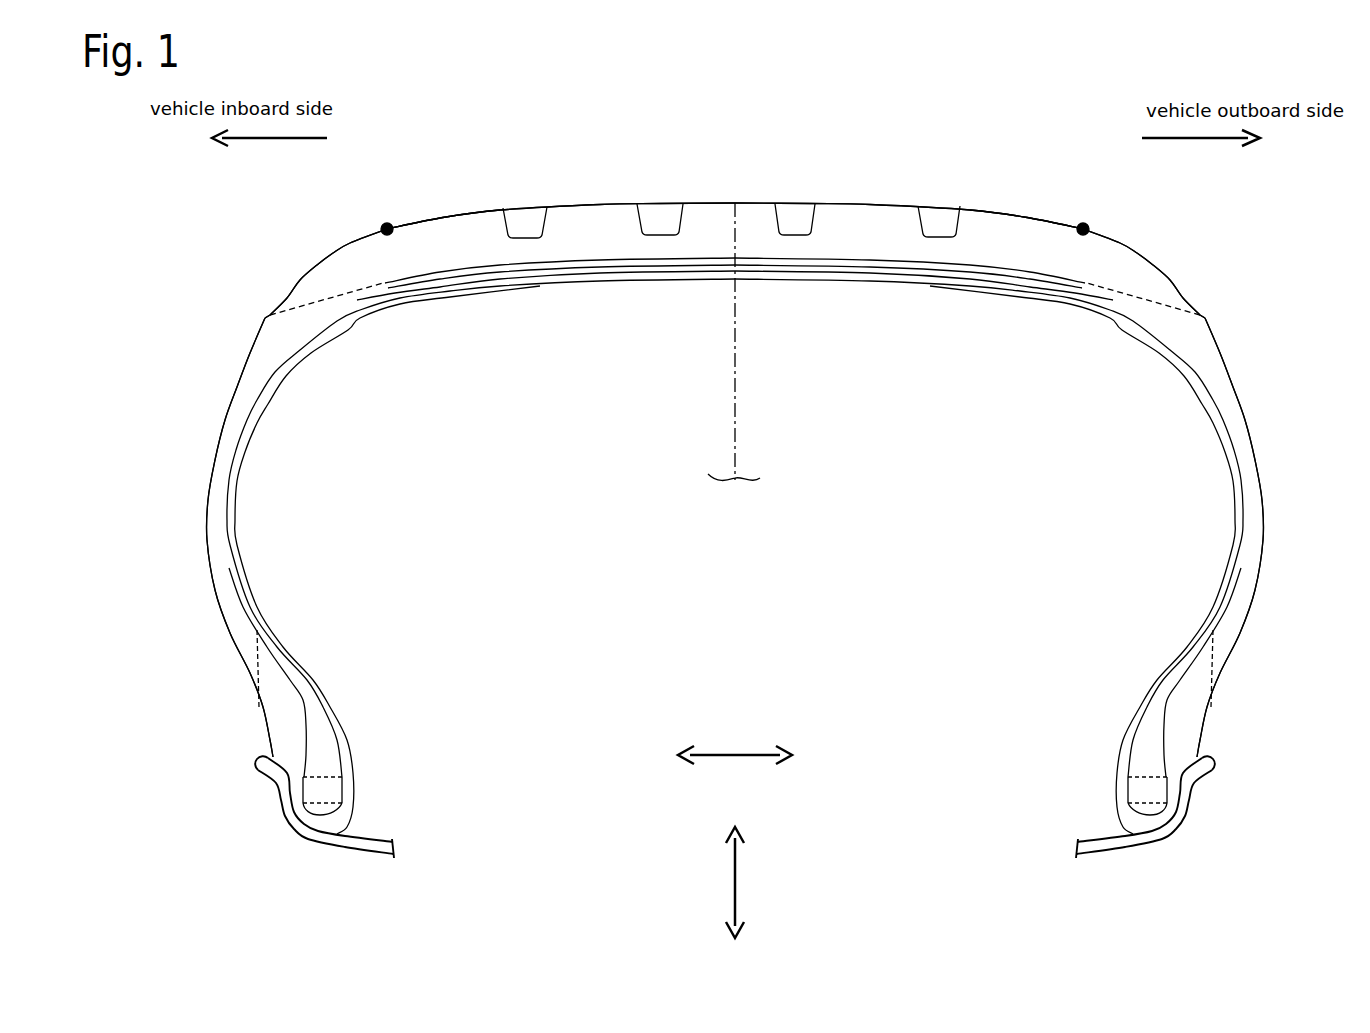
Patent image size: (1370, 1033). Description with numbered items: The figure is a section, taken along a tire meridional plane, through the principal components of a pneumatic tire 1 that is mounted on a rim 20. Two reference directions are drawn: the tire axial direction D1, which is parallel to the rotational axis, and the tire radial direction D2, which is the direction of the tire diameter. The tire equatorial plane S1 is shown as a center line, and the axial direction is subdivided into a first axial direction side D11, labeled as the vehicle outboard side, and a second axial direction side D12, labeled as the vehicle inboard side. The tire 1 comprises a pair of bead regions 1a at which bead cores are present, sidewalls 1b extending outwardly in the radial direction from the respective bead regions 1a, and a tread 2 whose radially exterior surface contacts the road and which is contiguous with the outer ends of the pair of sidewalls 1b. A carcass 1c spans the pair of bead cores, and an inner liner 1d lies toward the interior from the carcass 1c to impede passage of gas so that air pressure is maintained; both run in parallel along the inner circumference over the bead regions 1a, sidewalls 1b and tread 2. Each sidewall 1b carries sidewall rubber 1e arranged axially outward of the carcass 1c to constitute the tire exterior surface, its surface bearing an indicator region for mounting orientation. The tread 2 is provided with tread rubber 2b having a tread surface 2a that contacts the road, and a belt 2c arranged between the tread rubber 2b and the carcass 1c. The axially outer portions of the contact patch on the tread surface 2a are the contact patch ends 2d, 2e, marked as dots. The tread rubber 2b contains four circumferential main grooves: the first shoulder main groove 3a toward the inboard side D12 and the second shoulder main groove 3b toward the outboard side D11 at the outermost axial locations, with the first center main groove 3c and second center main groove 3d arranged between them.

The pneumatic tire 1 is at (1270, 204).
The bead region 1a is at (248, 738).
The sidewall 1b is at (212, 398).
The carcass 1c is at (483, 285).
The inner liner 1d is at (885, 285).
The sidewall rubber 1e is at (218, 478).
The tread 2 is at (611, 195).
The tread surface 2a is at (463, 207).
The tread rubber 2b is at (857, 208).
The belt 2c is at (605, 267).
The contact patch end 2d is at (387, 225).
The contact patch end 2e is at (1083, 225).
The first shoulder main groove 3a is at (525, 213).
The second shoulder main groove 3b is at (938, 205).
The first center main groove 3c is at (661, 209).
The second center main groove 3d is at (795, 203).
The rim 20 is at (328, 845).
The tire equatorial plane S1 is at (737, 414).
The tire axial direction D1 is at (735, 767).
The tire radial direction D2 is at (749, 882).
The first axial direction side D11 is at (1224, 138).
The second axial direction side D12 is at (247, 138).